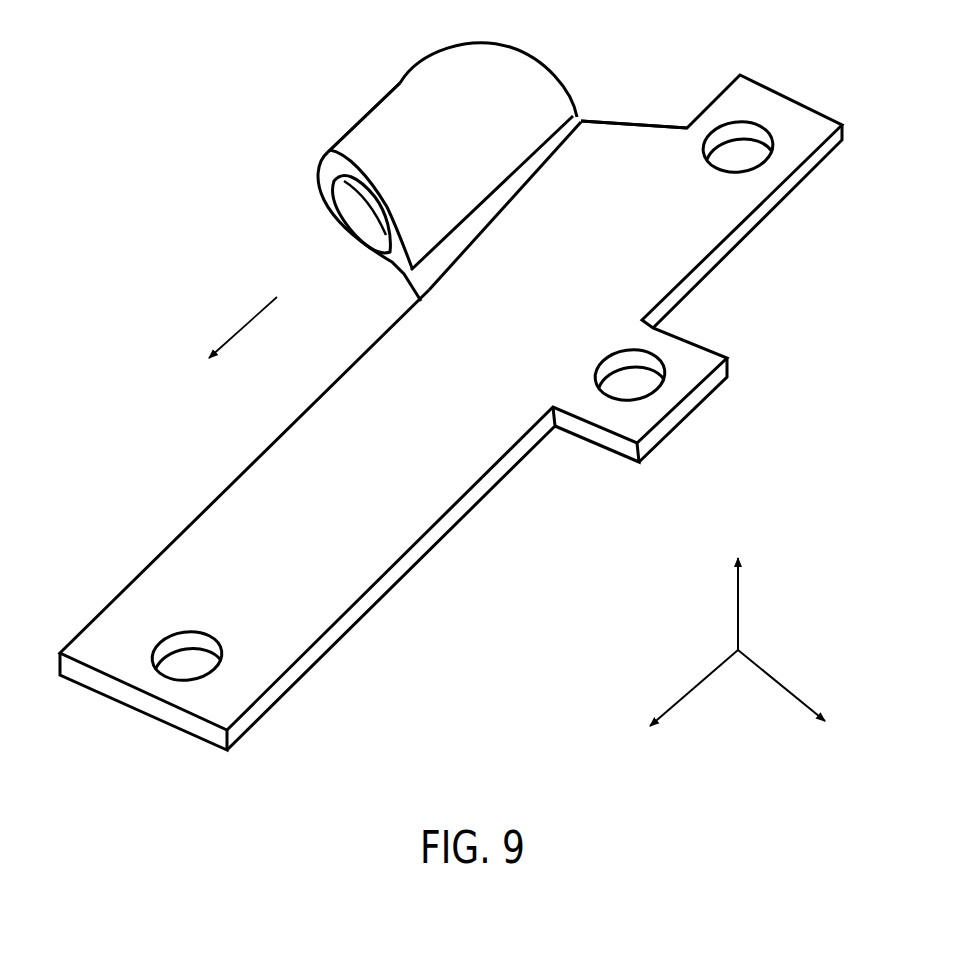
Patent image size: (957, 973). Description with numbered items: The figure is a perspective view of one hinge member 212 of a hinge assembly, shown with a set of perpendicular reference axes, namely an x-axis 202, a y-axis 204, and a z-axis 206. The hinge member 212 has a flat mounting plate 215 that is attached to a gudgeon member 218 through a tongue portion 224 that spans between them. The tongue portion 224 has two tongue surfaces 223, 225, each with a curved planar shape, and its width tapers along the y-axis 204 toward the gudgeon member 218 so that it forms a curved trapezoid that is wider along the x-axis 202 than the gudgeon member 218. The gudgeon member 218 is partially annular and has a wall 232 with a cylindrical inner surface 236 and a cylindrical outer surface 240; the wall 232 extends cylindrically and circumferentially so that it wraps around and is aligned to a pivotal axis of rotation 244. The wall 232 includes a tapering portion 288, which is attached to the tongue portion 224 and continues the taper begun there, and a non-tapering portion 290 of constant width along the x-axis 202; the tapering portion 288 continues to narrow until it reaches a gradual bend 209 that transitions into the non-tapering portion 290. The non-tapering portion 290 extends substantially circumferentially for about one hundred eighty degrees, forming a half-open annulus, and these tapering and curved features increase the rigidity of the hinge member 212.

The hinge member 212 is at (204, 103).
The mounting plate 215 is at (418, 440).
The gudgeon member 218 is at (410, 169).
The wall 232 is at (370, 135).
The gradual bend 209 is at (320, 177).
The cylindrical inner surface 236 is at (388, 197).
The non-tapering portion 290 is at (346, 230).
The tapering portion 288 is at (453, 85).
The cylindrical outer surface 240 is at (427, 120).
The tongue surface 225 is at (587, 118).
The tongue surface 223 is at (514, 211).
The tongue portion 224 is at (470, 247).
The pivotal axis of rotation 244 is at (238, 328).
The x-axis 202 is at (690, 693).
The y-axis 204 is at (785, 687).
The z-axis 206 is at (740, 587).